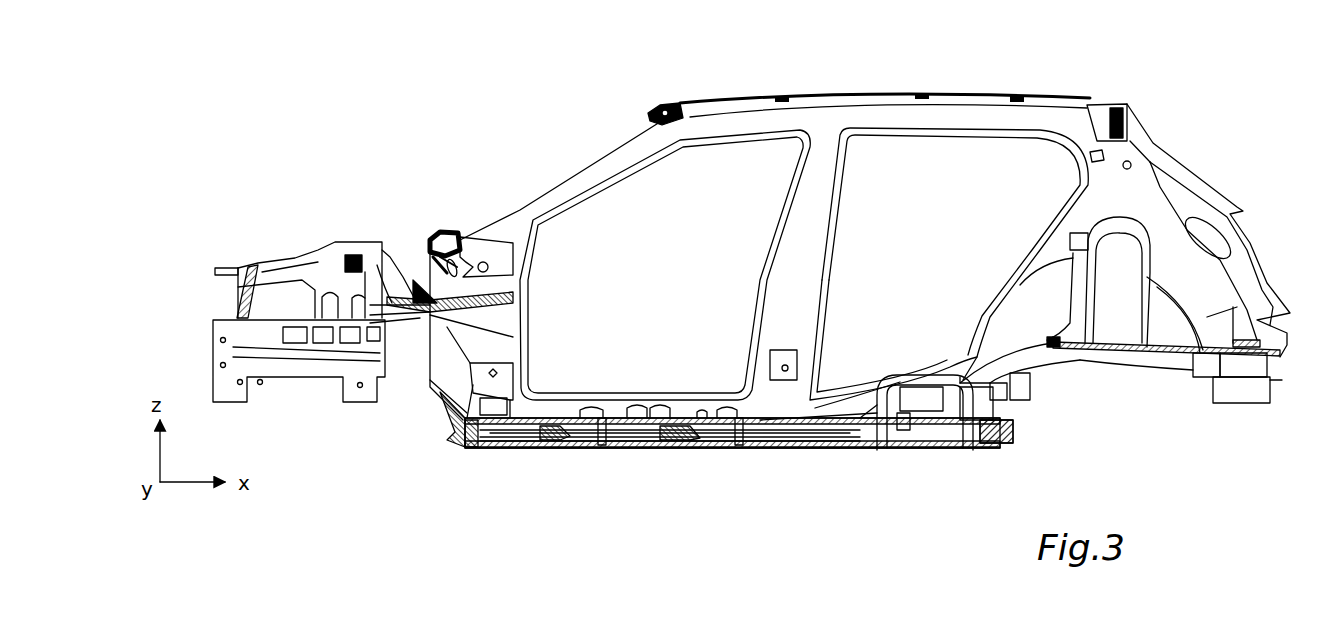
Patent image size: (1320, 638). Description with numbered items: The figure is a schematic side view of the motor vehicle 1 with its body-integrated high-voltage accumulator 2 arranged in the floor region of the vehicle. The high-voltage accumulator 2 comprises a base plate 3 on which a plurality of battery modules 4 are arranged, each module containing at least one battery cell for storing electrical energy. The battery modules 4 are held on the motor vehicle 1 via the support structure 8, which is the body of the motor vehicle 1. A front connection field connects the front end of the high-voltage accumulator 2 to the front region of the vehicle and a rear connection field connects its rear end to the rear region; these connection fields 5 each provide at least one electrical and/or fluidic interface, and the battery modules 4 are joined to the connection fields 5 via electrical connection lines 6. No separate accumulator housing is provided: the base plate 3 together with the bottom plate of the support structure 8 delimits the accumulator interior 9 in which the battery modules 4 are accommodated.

The motor vehicle 1 is at (1057, 97).
The high-voltage accumulator 2 is at (874, 466).
The base plate 3 is at (540, 452).
The battery modules 4 is at (660, 452).
The connection fields 5 is at (450, 430).
The electrical connection lines 6 is at (777, 450).
The support structure 8 is at (827, 413).
The accumulator interior 9 is at (687, 450).